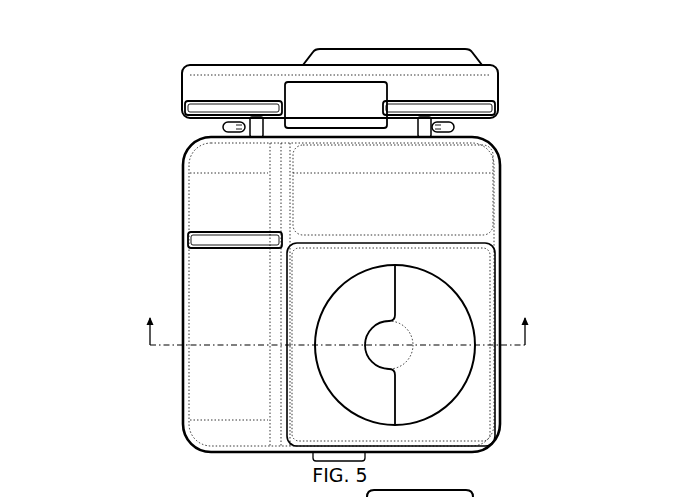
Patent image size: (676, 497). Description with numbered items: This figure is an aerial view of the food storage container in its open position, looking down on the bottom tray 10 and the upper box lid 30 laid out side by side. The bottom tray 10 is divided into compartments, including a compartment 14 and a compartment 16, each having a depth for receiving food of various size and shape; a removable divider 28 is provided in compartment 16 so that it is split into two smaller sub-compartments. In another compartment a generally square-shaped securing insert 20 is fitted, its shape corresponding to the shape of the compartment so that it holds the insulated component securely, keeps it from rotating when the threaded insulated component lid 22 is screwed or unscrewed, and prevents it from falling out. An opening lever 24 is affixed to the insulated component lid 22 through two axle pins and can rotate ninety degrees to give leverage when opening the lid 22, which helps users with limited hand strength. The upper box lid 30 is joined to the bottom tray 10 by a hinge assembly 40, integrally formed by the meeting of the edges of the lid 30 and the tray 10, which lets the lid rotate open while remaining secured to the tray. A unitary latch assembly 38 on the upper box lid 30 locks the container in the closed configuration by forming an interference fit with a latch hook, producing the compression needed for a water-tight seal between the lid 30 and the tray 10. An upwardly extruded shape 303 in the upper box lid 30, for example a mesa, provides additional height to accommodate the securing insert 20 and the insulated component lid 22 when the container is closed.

The bottom tray 10 is at (180, 152).
The compartment 14 is at (444, 196).
The compartment 16 is at (228, 200).
The securing insert 20 is at (464, 424).
The insulated component lid 22 is at (433, 378).
The opening lever 24 is at (369, 302).
The removable divider 28 is at (182, 242).
The upper box lid 30 is at (180, 85).
The latch assembly 38 is at (356, 110).
The hinge assembly 40 is at (458, 127).
The upwardly extruded shape 303 is at (484, 55).